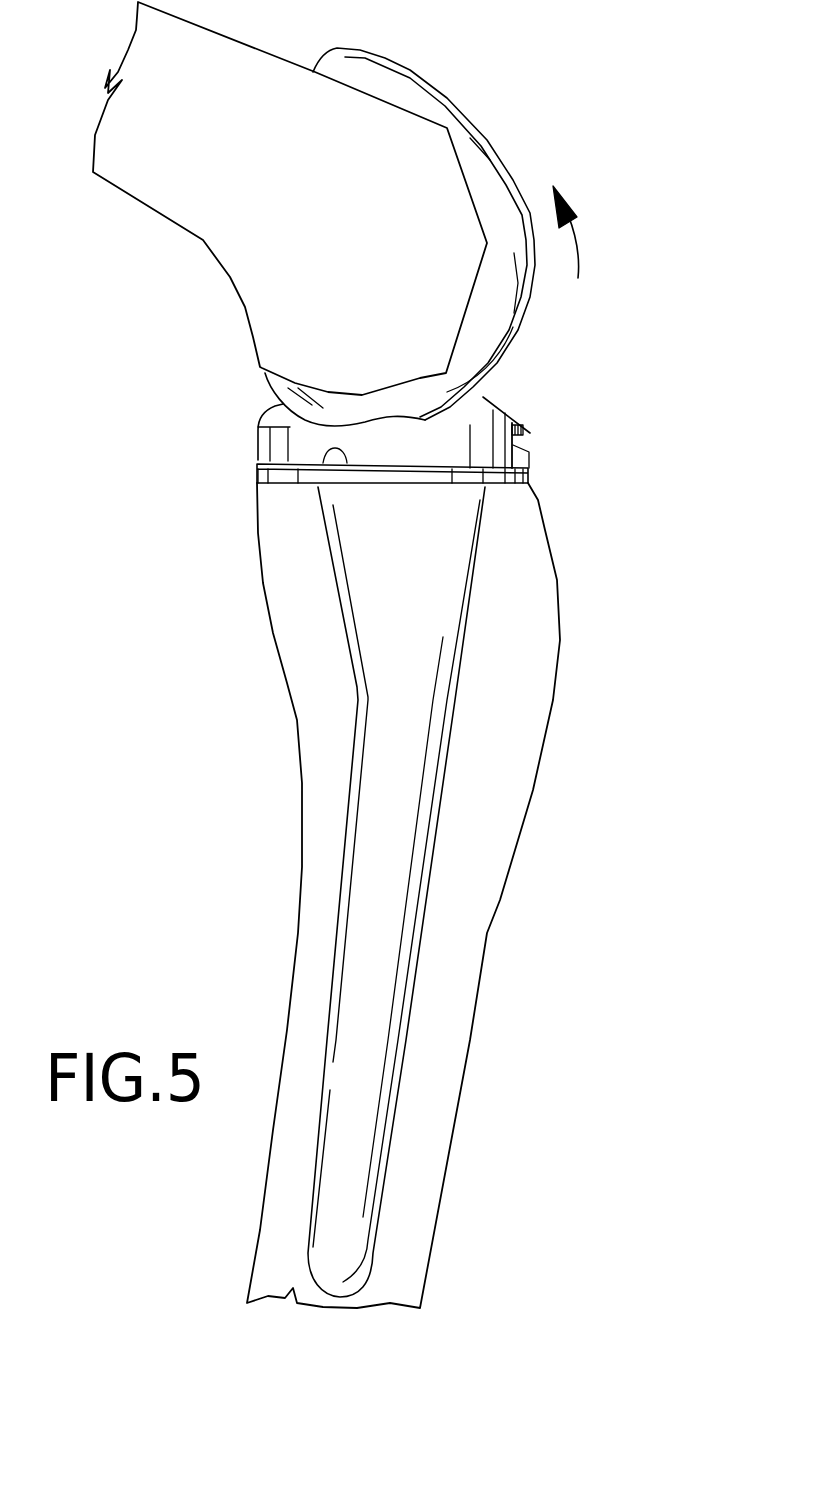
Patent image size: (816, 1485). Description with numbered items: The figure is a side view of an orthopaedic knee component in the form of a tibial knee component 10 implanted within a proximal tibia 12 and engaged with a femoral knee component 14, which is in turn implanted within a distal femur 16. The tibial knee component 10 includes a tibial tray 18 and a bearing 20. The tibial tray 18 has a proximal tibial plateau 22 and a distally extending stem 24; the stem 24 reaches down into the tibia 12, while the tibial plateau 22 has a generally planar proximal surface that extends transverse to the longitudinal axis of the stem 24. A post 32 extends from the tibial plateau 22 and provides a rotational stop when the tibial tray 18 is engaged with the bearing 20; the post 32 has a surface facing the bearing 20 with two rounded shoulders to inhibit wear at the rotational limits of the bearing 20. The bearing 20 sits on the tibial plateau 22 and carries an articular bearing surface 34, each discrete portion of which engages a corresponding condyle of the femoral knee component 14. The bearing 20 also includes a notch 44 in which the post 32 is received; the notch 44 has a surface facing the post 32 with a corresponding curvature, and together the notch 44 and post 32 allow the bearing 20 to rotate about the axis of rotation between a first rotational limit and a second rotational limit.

The tibial knee component 10 is at (598, 376).
The proximal tibia 12 is at (533, 790).
The femoral knee component 14 is at (410, 72).
The distal femur 16 is at (203, 240).
The tibial tray 18 is at (530, 487).
The bearing 20 is at (258, 450).
The tibial plateau 22 is at (325, 458).
The stem 24 is at (372, 1008).
The post 32 is at (532, 460).
The articular bearing surface 34 is at (480, 406).
The notch 44 is at (530, 435).